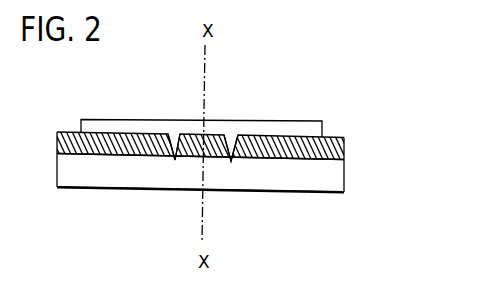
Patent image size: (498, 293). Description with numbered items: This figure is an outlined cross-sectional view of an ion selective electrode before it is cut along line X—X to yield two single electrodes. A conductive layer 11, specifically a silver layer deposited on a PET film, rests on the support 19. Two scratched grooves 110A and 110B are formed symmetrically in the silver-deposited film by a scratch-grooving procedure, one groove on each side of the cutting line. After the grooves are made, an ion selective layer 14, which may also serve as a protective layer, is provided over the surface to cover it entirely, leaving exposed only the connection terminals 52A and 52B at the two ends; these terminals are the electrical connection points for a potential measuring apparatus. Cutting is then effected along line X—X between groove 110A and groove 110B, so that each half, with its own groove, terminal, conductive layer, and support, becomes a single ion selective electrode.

The ion selective layer 14 is at (310, 129).
The connection terminal 52A is at (60, 130).
The connection terminal 52B is at (337, 137).
The groove 110A is at (172, 132).
The groove 110B is at (233, 132).
The conductive layer 11 is at (343, 160).
The support 19 is at (338, 180).